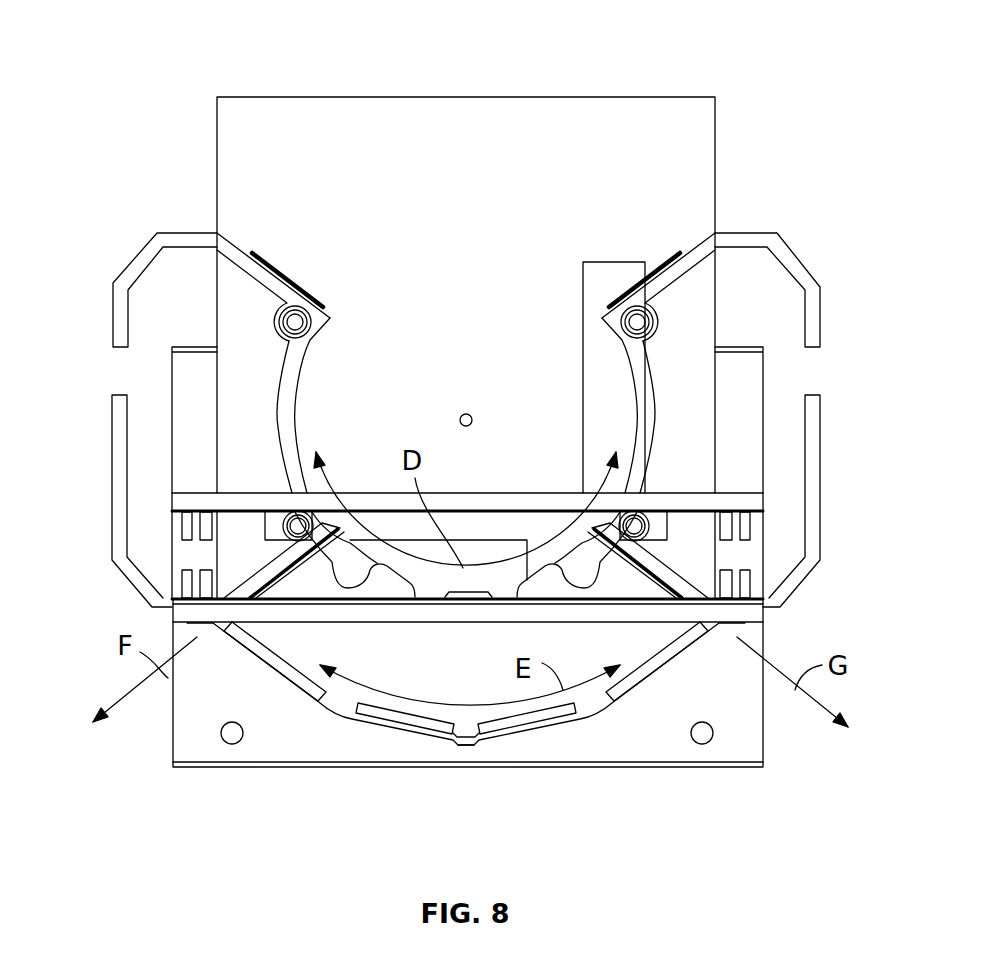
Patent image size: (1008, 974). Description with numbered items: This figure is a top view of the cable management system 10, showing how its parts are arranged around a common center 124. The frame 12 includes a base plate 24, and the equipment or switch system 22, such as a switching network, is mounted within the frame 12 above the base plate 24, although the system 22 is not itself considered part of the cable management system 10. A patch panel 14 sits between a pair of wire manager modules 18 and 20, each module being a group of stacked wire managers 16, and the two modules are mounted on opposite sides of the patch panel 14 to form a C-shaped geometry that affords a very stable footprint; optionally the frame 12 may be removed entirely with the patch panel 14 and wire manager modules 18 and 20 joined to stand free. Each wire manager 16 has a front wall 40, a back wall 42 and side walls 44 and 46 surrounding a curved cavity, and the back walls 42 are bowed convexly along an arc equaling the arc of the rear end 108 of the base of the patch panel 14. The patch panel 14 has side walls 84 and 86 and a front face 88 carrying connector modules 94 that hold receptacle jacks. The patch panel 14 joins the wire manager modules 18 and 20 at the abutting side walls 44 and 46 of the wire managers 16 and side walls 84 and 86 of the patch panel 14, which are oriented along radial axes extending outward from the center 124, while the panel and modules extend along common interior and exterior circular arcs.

The cable management system 10 is at (118, 42).
The frame 12 is at (750, 612).
The patch panel 14 is at (427, 672).
The wire manager 16 is at (135, 270).
The wire manager module 18 is at (178, 214).
The wire manager module 20 is at (750, 197).
The equipment system 22 is at (428, 229).
The base plate 24 is at (752, 742).
The front wall 40 is at (121, 433).
The back wall 42 is at (300, 375).
The side wall 44 is at (683, 578).
The side wall 46 is at (250, 585).
The side wall 84 is at (652, 598).
The side wall 86 is at (270, 593).
The front face 88 is at (468, 742).
The connector module 94 is at (273, 665).
The rear end 108 is at (552, 565).
The center 124 is at (466, 414).